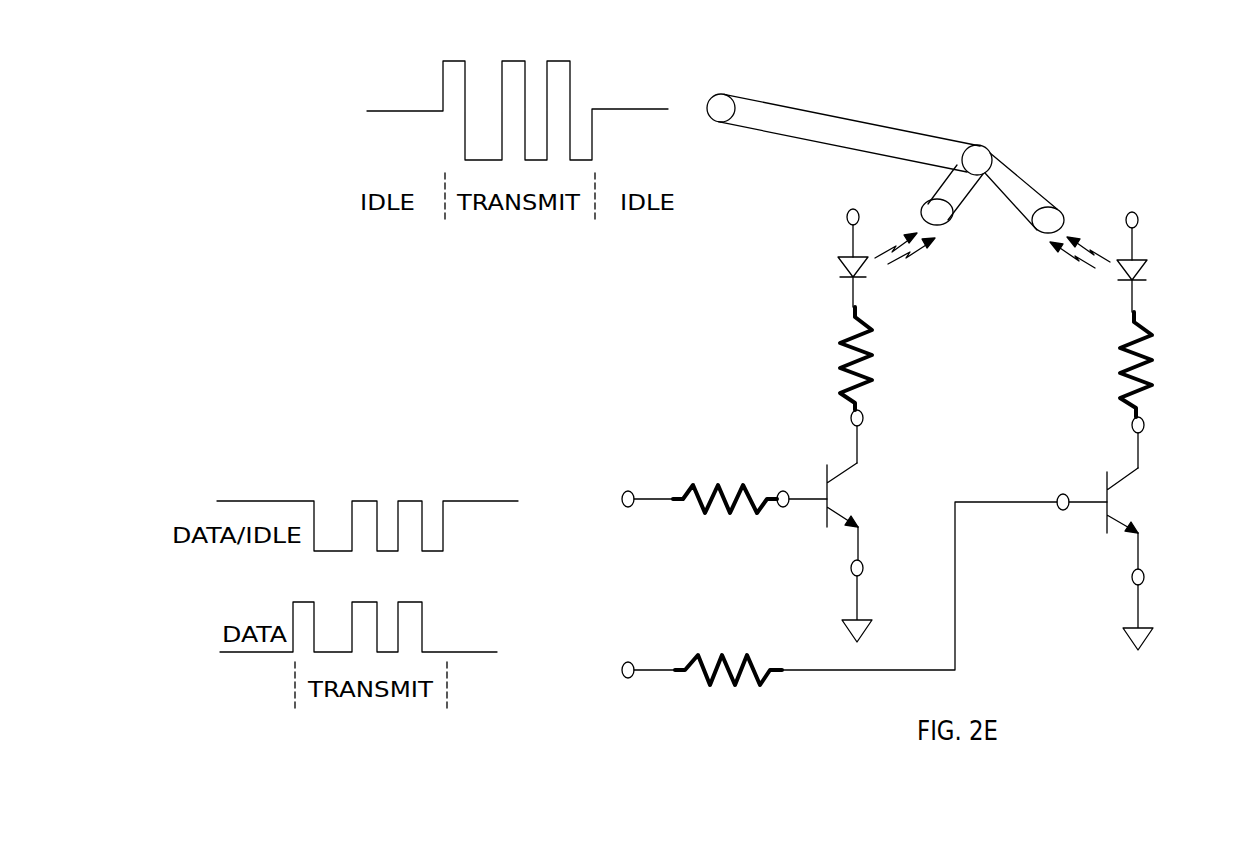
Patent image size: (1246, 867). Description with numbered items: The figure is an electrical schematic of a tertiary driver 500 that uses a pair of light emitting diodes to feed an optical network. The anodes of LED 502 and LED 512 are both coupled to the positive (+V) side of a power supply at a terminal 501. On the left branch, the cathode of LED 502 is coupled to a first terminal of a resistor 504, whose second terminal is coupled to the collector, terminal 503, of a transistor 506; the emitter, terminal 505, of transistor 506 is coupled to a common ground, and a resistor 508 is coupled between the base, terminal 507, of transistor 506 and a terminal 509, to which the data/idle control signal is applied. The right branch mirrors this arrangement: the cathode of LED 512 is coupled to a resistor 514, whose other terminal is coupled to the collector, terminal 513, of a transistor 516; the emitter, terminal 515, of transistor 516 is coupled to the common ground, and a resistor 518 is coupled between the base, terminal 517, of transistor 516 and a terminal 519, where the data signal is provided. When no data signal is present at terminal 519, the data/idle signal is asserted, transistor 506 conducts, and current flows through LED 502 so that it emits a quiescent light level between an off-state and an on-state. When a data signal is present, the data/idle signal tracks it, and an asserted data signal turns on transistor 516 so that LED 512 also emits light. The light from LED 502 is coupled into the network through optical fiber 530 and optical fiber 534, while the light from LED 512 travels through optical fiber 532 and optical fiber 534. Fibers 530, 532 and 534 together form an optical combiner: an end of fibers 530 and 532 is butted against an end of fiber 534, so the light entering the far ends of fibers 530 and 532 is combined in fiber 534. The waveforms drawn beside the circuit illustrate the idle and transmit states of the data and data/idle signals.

The tertiary driver 500 is at (727, 341).
The terminal 501 is at (846, 213).
The LED 502 is at (840, 270).
The collector terminal 503 is at (863, 420).
The resistor 504 is at (877, 377).
The emitter terminal 505 is at (863, 568).
The transistor 506 is at (848, 508).
The base terminal 507 is at (783, 490).
The resistor 508 is at (742, 482).
The terminal 509 is at (628, 490).
The LED 512 is at (1140, 268).
The collector terminal 513 is at (1145, 427).
The resistor 514 is at (1157, 383).
The emitter terminal 515 is at (1145, 577).
The transistor 516 is at (1125, 520).
The base terminal 517 is at (1082, 472).
The resistor 518 is at (750, 652).
The terminal 519 is at (628, 661).
The optical fiber 530 is at (972, 198).
The optical fiber 532 is at (1015, 172).
The optical fiber 534 is at (860, 122).